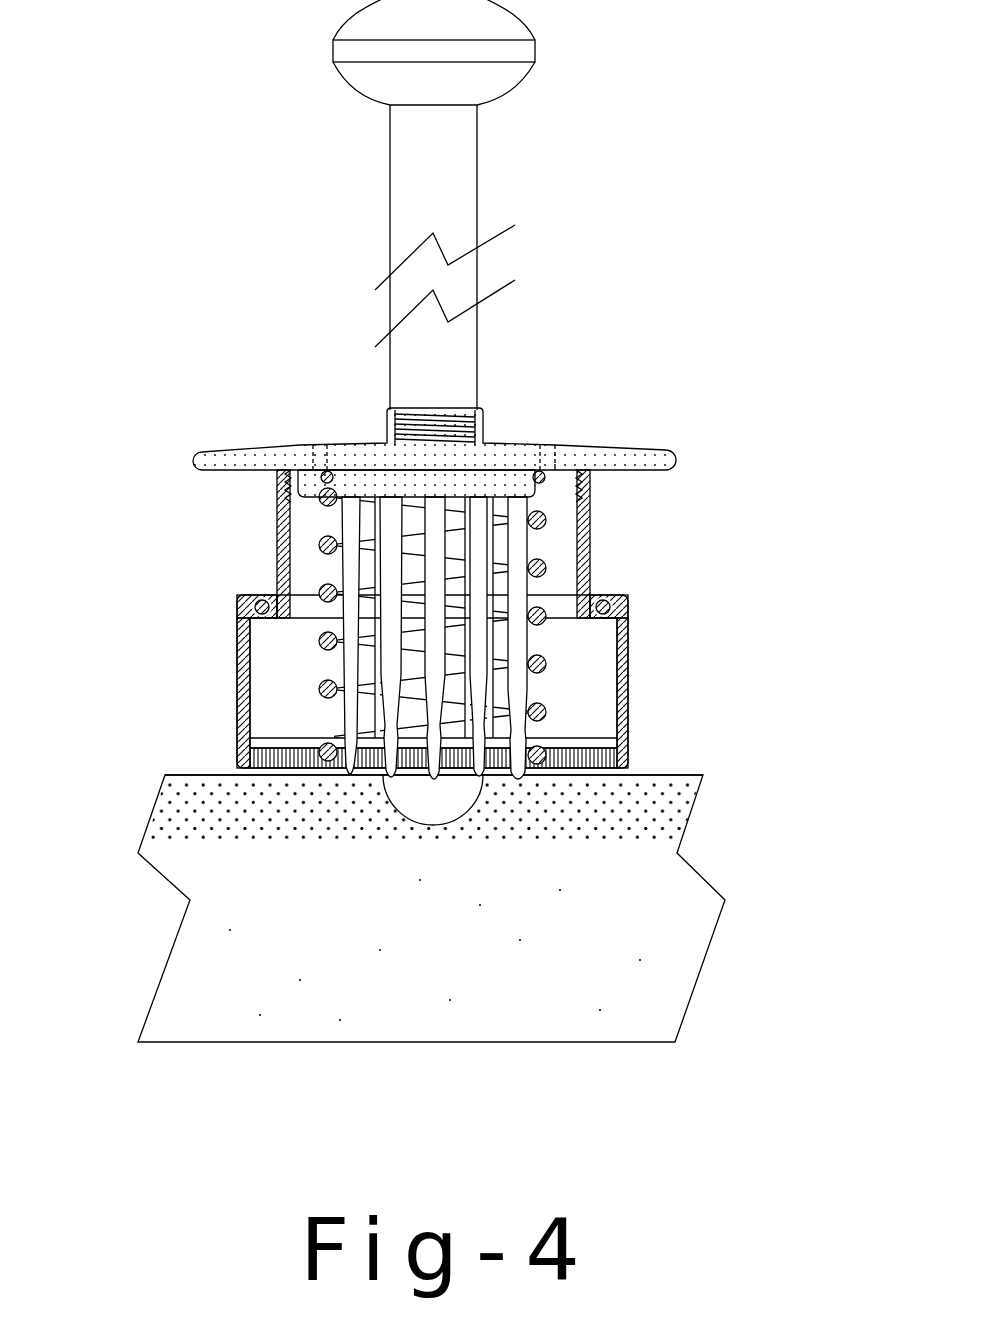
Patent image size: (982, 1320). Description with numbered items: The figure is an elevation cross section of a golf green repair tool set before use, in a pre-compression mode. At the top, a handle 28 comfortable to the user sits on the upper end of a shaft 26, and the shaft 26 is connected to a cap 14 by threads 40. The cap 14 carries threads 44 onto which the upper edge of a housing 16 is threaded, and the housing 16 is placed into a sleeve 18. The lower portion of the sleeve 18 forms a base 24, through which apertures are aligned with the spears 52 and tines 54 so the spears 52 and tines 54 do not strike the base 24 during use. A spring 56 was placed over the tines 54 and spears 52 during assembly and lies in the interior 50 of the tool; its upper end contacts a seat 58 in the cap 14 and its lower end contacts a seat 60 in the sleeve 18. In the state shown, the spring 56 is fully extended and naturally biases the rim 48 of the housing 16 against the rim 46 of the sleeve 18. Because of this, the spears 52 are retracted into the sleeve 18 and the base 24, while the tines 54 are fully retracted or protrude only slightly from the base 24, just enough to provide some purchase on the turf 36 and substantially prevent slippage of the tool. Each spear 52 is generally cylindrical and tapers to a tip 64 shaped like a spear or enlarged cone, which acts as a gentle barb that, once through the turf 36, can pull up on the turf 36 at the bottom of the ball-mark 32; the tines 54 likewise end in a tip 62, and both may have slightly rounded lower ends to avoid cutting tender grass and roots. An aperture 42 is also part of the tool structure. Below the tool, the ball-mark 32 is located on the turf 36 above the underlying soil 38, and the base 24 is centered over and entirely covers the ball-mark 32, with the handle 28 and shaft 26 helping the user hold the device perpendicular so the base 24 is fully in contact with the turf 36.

The cap 14 is at (658, 457).
The housing 16 is at (583, 538).
The sleeve 18 is at (625, 745).
The base 24 is at (293, 767).
The shaft 26 is at (477, 353).
The handle 28 is at (493, 70).
The ball-mark 32 is at (407, 818).
The turf 36 is at (627, 822).
The soil 38 is at (608, 958).
The threads 40 is at (474, 414).
The aperture 42 is at (562, 447).
The threads 44 is at (286, 481).
The rim 46 is at (262, 603).
The rim 48 is at (243, 620).
The interior 50 is at (310, 519).
The spears 52 is at (475, 607).
The tines 54 is at (515, 648).
The spring 56 is at (537, 718).
The seat 58 is at (495, 481).
The seat 60 is at (600, 768).
The tip 62 is at (262, 752).
The tip 64 is at (392, 753).